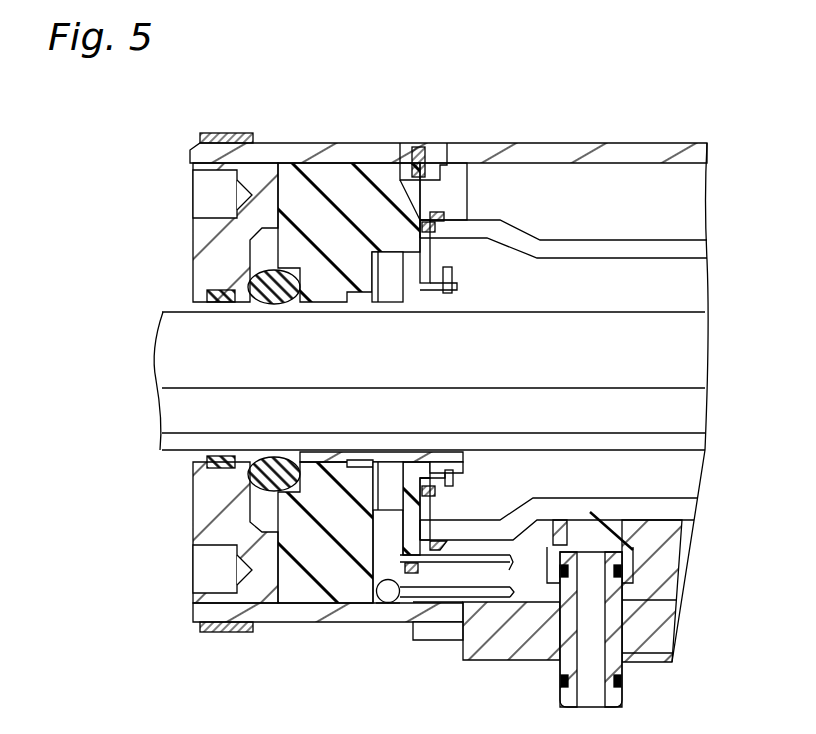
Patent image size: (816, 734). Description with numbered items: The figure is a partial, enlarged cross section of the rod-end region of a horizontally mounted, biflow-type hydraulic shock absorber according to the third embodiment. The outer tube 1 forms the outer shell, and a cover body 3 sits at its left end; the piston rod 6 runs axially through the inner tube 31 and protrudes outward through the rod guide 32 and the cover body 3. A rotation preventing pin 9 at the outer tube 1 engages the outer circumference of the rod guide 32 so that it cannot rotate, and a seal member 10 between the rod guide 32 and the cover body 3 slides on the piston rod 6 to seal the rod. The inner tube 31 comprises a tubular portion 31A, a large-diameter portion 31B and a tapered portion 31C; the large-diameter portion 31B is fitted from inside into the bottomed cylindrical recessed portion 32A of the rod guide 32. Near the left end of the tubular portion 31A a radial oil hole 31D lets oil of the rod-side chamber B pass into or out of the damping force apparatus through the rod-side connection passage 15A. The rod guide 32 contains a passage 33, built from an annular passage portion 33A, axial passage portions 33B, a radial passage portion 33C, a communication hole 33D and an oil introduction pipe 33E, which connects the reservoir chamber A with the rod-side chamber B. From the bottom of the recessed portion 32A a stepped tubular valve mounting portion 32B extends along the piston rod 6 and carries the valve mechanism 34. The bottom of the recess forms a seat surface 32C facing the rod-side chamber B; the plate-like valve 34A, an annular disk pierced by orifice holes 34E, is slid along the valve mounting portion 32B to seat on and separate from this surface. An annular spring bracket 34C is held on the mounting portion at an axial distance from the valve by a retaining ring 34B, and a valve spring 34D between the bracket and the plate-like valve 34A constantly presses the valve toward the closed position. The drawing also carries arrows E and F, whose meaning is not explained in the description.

The outer tube 1 is at (610, 152).
The cover body 3 is at (208, 242).
The piston rod 6 is at (690, 364).
The rotation preventing pin 9 is at (426, 150).
The seal member 10 is at (243, 283).
The rod-side connection passage 15A is at (610, 622).
The inner tube 31 is at (682, 528).
The tubular portion 31A is at (693, 242).
The large-diameter portion 31B is at (463, 190).
The tapered portion 31C is at (525, 255).
The oil hole 31D is at (633, 550).
The rod guide 32 is at (300, 215).
The recessed portion 32A is at (420, 192).
The valve mounting portion 32B is at (475, 227).
The seat surface 32C is at (405, 575).
The passage 33 is at (403, 500).
The annular passage portion 33A is at (378, 262).
The axial passage portions 33B is at (415, 255).
The radial passage portion 33C is at (375, 578).
The communication hole 33D is at (432, 545).
The oil introduction pipe 33E is at (510, 565).
The valve mechanism 34 is at (470, 479).
The plate-like valve 34A is at (440, 220).
The retaining ring 34B is at (462, 497).
The annular spring bracket 34C is at (455, 500).
The valve spring 34D is at (443, 550).
The orifice holes 34E is at (412, 570).
The reservoir chamber A is at (648, 190).
The rod-side chamber B is at (688, 286).
The direction E is at (572, 467).
The direction F is at (565, 292).